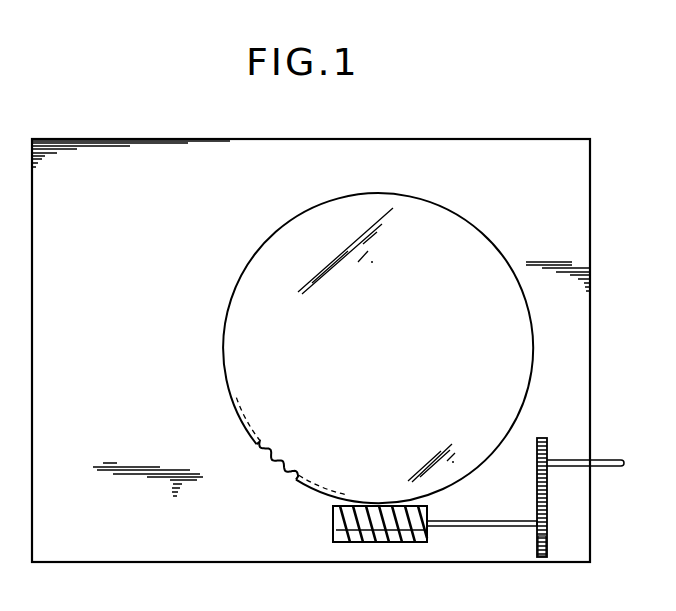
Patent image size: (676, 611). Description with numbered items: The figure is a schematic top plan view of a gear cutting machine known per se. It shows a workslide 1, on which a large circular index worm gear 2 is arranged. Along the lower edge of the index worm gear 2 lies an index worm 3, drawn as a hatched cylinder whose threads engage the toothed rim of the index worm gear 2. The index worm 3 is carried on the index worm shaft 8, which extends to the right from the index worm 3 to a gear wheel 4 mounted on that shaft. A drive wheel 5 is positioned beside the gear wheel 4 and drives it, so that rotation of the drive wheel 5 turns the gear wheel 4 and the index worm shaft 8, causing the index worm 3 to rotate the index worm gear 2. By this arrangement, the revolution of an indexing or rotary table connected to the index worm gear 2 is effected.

The workslide 1 is at (137, 160).
The index worm gear 2 is at (247, 291).
The index worm 3 is at (343, 522).
The gear wheel 4 is at (545, 541).
The drive wheel 5 is at (548, 446).
The index worm shaft 8 is at (493, 526).